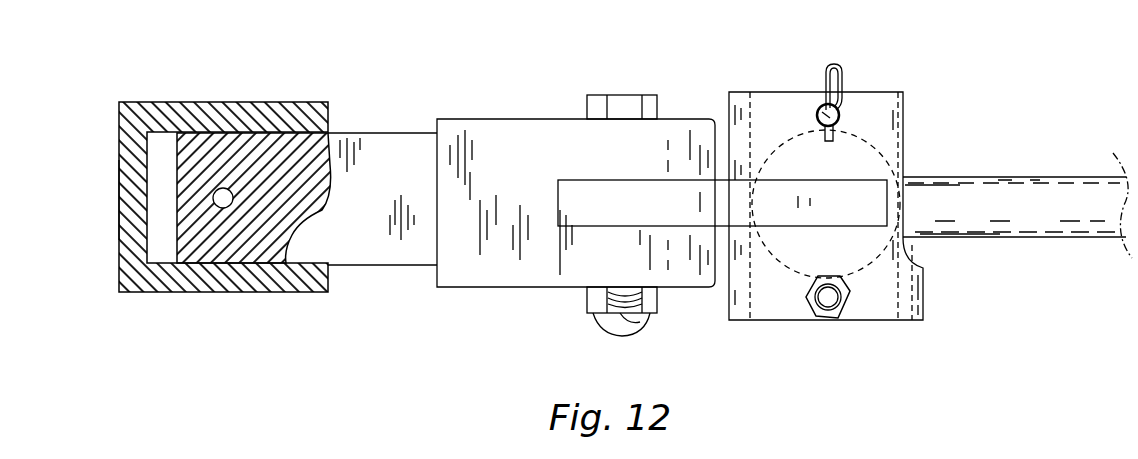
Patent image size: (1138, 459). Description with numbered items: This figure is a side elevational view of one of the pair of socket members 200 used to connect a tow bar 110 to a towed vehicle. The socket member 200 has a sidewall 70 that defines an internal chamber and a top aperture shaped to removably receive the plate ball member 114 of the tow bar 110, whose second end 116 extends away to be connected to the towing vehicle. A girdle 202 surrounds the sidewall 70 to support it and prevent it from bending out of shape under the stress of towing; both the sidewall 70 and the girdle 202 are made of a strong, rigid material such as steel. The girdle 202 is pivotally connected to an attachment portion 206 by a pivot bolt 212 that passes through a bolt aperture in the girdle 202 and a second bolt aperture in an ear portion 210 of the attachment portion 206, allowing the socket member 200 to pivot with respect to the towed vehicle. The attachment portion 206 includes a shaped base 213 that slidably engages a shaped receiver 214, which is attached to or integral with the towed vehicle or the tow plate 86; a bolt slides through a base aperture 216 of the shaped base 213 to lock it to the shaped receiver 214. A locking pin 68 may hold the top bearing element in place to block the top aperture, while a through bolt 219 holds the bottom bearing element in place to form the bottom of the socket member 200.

The tow plate 86 is at (119, 197).
The shaped receiver 214 is at (260, 296).
The base aperture 216 is at (214, 190).
The shaped base 213 is at (363, 252).
The attachment portion 206 is at (475, 273).
The ear portion 210 is at (692, 130).
The pivot bolt 212 is at (612, 100).
The girdle 202 is at (792, 195).
The sidewall 70 is at (879, 124).
The plate ball member 114 is at (792, 246).
The locking pin 68 is at (823, 105).
The through bolt 219 is at (842, 320).
The tow bar 110 is at (1081, 178).
The second end 116 is at (946, 177).
The socket member 200 is at (945, 372).